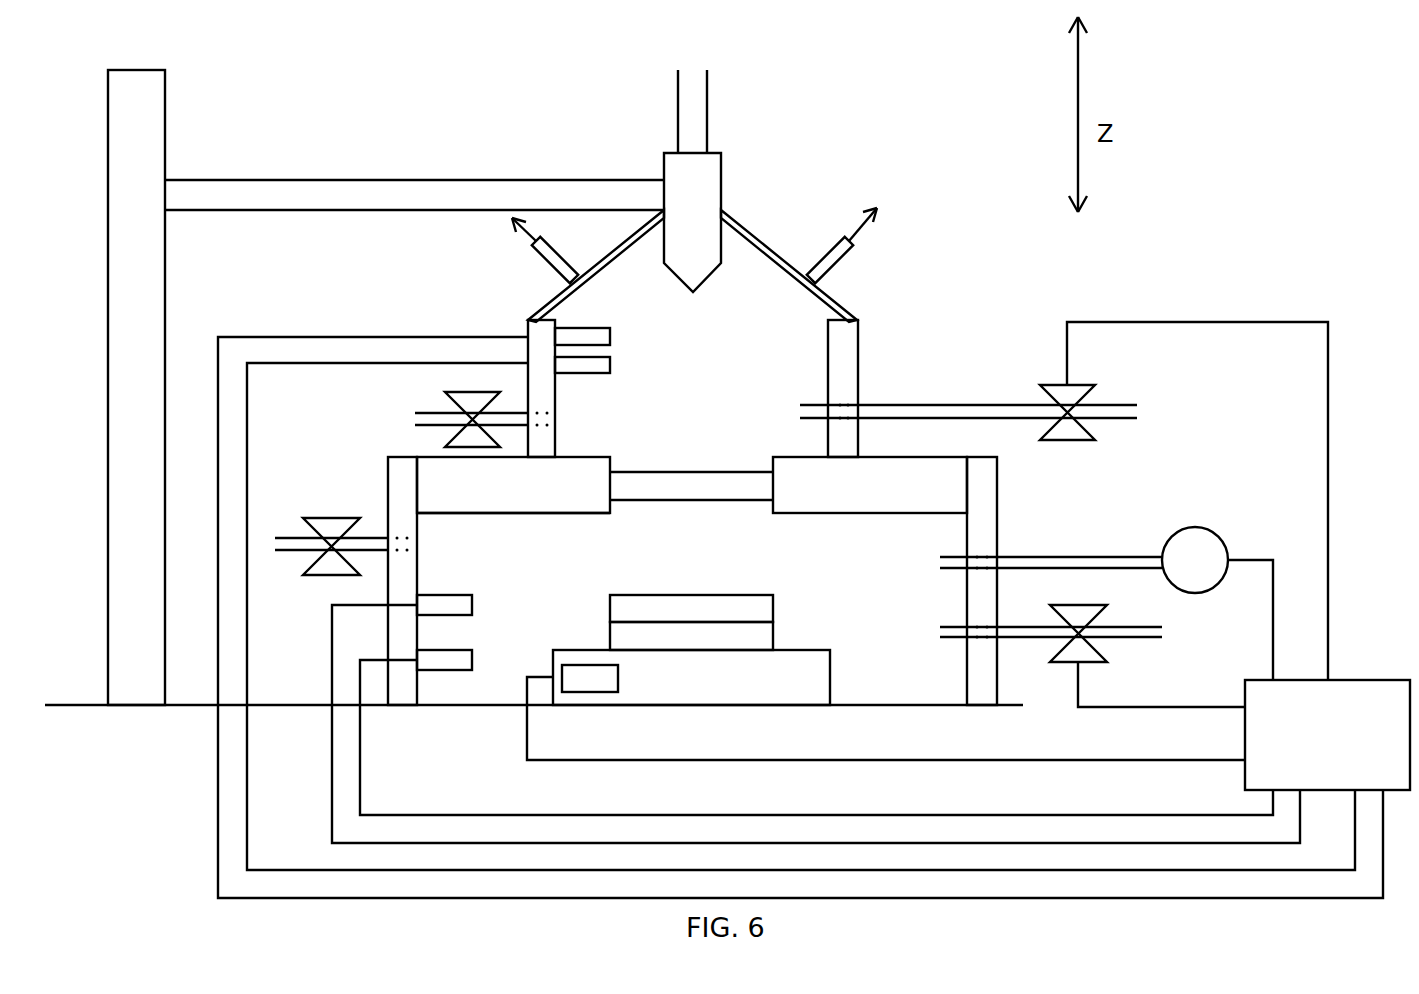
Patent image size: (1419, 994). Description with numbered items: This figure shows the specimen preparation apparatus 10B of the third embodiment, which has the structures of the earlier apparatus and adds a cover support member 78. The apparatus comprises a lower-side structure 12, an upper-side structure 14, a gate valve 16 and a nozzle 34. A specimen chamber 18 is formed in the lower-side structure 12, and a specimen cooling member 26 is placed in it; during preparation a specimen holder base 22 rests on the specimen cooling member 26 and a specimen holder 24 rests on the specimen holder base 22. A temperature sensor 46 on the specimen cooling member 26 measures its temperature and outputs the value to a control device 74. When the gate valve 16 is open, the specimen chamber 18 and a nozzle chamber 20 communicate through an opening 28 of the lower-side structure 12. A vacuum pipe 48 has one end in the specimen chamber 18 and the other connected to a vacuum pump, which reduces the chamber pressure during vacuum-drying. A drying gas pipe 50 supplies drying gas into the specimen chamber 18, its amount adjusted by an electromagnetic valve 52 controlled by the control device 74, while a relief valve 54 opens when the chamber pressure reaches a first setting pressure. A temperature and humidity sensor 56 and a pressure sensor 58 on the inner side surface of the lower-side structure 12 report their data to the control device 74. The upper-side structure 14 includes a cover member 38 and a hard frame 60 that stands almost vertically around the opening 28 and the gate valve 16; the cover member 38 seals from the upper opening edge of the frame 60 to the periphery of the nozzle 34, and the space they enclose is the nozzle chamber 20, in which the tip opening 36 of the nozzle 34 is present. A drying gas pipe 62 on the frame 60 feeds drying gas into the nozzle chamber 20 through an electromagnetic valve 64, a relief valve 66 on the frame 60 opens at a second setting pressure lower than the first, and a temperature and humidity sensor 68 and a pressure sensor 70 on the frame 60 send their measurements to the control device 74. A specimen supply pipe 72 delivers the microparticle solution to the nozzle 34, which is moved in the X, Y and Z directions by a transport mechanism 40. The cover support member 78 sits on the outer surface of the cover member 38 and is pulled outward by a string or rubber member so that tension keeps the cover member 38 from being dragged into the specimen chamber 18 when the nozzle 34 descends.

The specimen preparation apparatus 10B is at (516, 40).
The lower-side structure 12 is at (997, 548).
The upper-side structure 14 is at (875, 293).
The gate valve 16 is at (655, 472).
The specimen chamber 18 is at (578, 554).
The nozzle chamber 20 is at (763, 316).
The specimen holder base 22 is at (775, 638).
The specimen holder 24 is at (775, 610).
The specimen cooling member 26 is at (835, 680).
The opening 28 is at (612, 513).
The nozzle 34 is at (721, 200).
The tip opening 36 is at (575, 305).
The cover member 38 is at (775, 245).
The transport mechanism 40 is at (165, 125).
The temperature sensor 46 is at (597, 695).
The vacuum pipe 48 is at (1085, 557).
The drying gas pipe 50 is at (1012, 640).
The electromagnetic valve 52 is at (1090, 605).
The relief valve 54 is at (320, 520).
The temperature and humidity sensor 56 is at (472, 598).
The pressure sensor 58 is at (472, 650).
The frame 60 is at (860, 340).
The drying gas pipe 62 is at (940, 405).
The electromagnetic valve 64 is at (1075, 385).
The relief valve 66 is at (450, 395).
The temperature and humidity sensor 68 is at (612, 335).
The pressure sensor 70 is at (612, 365).
The specimen supply pipe 72 is at (707, 118).
The control device 74 is at (1375, 680).
The cover support member 78 is at (540, 262).